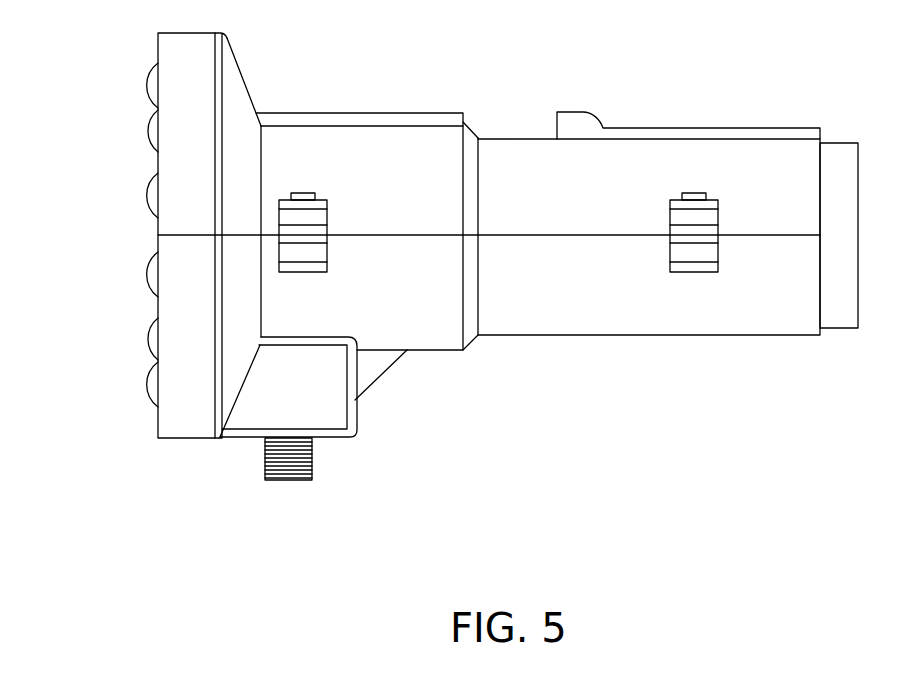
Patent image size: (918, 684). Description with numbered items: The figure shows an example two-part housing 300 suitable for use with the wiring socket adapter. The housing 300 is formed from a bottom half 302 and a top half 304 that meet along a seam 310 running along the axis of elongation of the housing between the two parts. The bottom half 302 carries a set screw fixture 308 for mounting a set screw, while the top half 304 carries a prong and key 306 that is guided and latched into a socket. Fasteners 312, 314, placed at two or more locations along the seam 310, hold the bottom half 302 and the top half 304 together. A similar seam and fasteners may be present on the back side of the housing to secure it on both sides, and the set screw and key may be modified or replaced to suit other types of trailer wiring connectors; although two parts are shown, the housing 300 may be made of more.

The housing 300 is at (114, 471).
The bottom half 302 is at (158, 312).
The top half 304 is at (158, 162).
The prong and key 306 is at (710, 128).
The set screw fixture 308 is at (327, 438).
The seam 310 is at (398, 235).
The fastener 312 is at (327, 253).
The fastener 314 is at (719, 253).